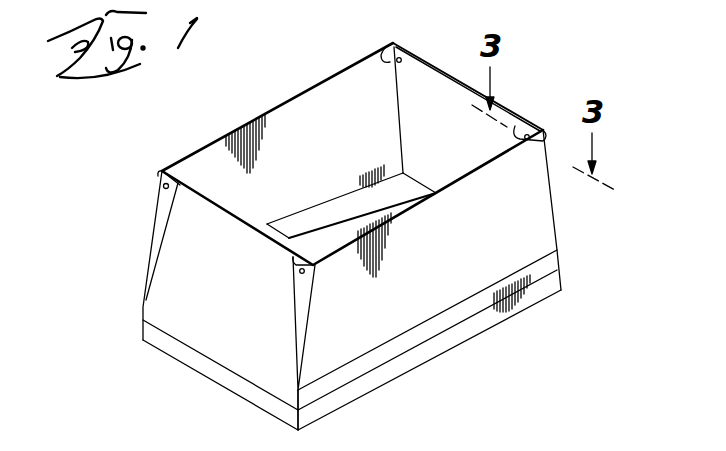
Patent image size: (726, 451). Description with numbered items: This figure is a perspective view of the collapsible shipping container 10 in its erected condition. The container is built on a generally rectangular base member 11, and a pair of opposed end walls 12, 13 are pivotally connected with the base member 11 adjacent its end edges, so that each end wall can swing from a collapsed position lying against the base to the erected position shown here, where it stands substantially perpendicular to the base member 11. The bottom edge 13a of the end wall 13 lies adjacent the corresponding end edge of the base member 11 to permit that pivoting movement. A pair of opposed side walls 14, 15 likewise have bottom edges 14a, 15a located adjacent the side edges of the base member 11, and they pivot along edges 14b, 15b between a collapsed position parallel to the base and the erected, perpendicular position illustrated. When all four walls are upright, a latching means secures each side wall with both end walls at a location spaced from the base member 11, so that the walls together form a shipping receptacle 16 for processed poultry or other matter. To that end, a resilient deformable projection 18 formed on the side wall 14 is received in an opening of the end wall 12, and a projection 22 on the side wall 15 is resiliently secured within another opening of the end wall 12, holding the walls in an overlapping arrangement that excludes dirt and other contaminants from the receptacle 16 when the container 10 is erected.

The collapsible shipping container 10 is at (598, 215).
The base member 11 is at (353, 393).
The end wall 12 is at (418, 78).
The end wall 13 is at (205, 340).
The bottom edge 13a is at (230, 373).
The side wall 14 is at (467, 273).
The bottom edge 14a is at (403, 355).
The edge 14b is at (437, 317).
The side wall 15 is at (222, 152).
The bottom edge 15a is at (358, 195).
The edge 15b is at (297, 212).
The shipping receptacle 16 is at (437, 118).
The resilient deformable projection 18 is at (387, 64).
The projection 22 is at (515, 126).